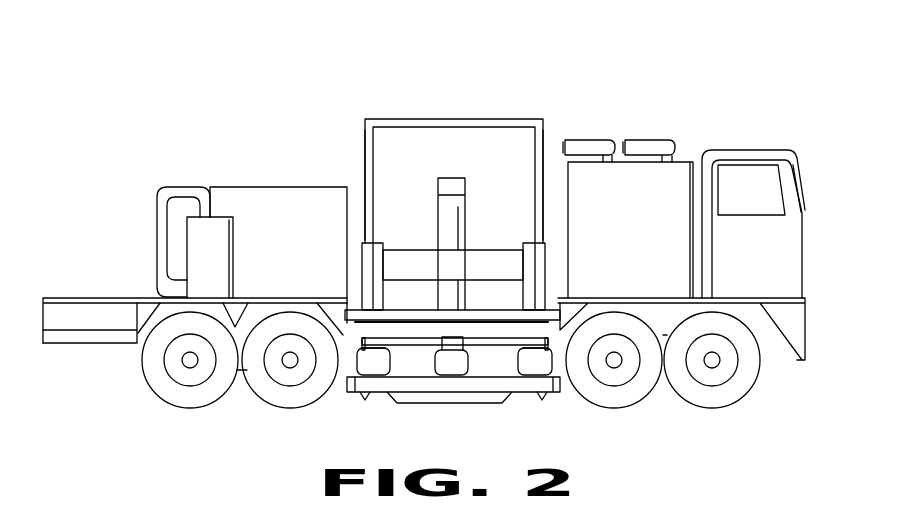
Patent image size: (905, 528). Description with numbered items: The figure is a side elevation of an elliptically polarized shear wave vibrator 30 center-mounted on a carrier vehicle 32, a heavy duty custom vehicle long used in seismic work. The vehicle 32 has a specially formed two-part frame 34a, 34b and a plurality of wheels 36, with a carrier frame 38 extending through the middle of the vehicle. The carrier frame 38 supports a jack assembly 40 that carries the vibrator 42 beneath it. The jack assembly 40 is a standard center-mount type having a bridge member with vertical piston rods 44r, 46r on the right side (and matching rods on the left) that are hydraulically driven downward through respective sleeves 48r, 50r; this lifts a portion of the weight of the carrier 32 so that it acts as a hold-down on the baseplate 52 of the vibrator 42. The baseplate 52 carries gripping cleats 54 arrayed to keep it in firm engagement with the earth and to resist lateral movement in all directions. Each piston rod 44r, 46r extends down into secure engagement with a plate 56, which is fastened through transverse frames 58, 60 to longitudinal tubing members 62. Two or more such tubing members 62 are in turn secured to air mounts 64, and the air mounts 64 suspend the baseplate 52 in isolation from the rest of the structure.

The hi-rail vehicle 30 is at (552, 88).
The carrier vehicle 32 is at (723, 150).
The two-part frame 34a is at (665, 318).
The two-part frame 34b is at (236, 327).
The wheels 36 is at (178, 398).
The carrier frame 38 is at (522, 317).
The jack assembly 40 is at (443, 120).
The vibrator 42 is at (380, 420).
The vertical piston rod 44r is at (372, 150).
The vertical piston rod 46r is at (530, 148).
The sleeve 48r is at (370, 257).
The sleeve 50r is at (530, 252).
The baseplate 52 is at (535, 385).
The cleats 54 is at (362, 395).
The plate 56 is at (428, 345).
The transverse frame 58 is at (393, 333).
The transverse frame 60 is at (510, 333).
The longitudinal tubing members 62 is at (433, 347).
The air mounts 64 is at (372, 367).